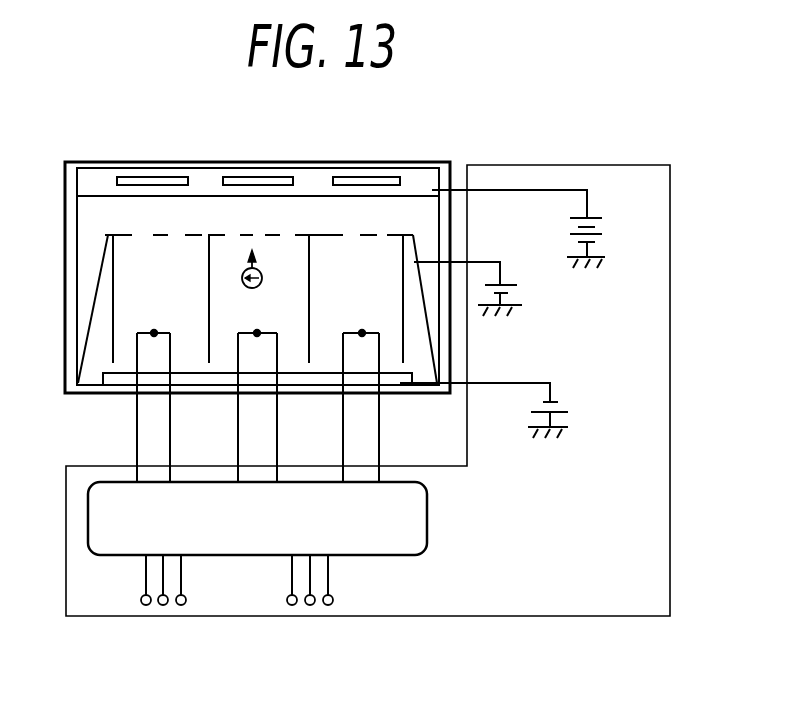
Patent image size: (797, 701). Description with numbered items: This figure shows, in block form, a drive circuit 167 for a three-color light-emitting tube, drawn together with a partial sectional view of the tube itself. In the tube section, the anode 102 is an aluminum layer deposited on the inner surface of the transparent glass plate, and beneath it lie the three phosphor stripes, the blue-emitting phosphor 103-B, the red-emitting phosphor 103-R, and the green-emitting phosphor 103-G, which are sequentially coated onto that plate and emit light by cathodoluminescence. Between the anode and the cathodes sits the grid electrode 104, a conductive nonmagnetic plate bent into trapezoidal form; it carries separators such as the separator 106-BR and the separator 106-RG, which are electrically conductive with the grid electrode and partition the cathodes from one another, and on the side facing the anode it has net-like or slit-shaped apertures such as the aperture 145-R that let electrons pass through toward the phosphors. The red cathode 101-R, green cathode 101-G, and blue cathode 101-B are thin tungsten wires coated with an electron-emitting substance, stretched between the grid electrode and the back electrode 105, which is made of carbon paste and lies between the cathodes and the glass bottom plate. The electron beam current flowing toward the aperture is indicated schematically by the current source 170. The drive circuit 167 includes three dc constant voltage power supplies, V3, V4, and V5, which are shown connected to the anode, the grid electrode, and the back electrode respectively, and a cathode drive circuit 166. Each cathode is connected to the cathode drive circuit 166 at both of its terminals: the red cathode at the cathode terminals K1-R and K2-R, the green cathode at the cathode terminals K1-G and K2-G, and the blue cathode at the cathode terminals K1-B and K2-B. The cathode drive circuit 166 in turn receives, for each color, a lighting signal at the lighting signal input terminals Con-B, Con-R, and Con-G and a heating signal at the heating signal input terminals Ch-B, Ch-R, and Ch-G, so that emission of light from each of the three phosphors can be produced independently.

The anode 102 is at (423, 185).
The blue-emitting phosphor 103-B is at (157, 178).
The red-emitting phosphor 103-R is at (253, 178).
The green-emitting phosphor 103-G is at (367, 178).
The grid electrode 104 is at (95, 272).
The back electrode 105 is at (105, 375).
The aperture 145-R is at (250, 234).
The separator 106-BR is at (209, 297).
The separator 106-RG is at (309, 297).
The electron beam current source 170 is at (262, 280).
The blue cathode 101-B is at (154, 336).
The red cathode 101-R is at (257, 336).
The green cathode 101-G is at (362, 336).
The cathode terminal K2-B is at (137, 438).
The cathode terminal K1-B is at (172, 460).
The cathode terminal K2-R is at (238, 425).
The cathode terminal K1-R is at (277, 448).
The cathode terminal K1-G is at (379, 442).
The cathode terminal K2-G is at (343, 445).
The anode voltage source V3 is at (531, 229).
The focusing electrode voltage source V4 is at (473, 286).
The bottom electrode voltage source V5 is at (499, 410).
The cathode drive circuit 166 is at (96, 548).
The drive circuit 167 is at (672, 530).
The lighting signal input terminal Con-B is at (144, 605).
The lighting signal input terminal Con-R is at (163, 605).
The lighting signal input terminal Con-G is at (185, 604).
The heating signal input terminal Ch-B is at (292, 605).
The heating signal input terminal Ch-R is at (313, 604).
The heating signal input terminal Ch-G is at (332, 604).